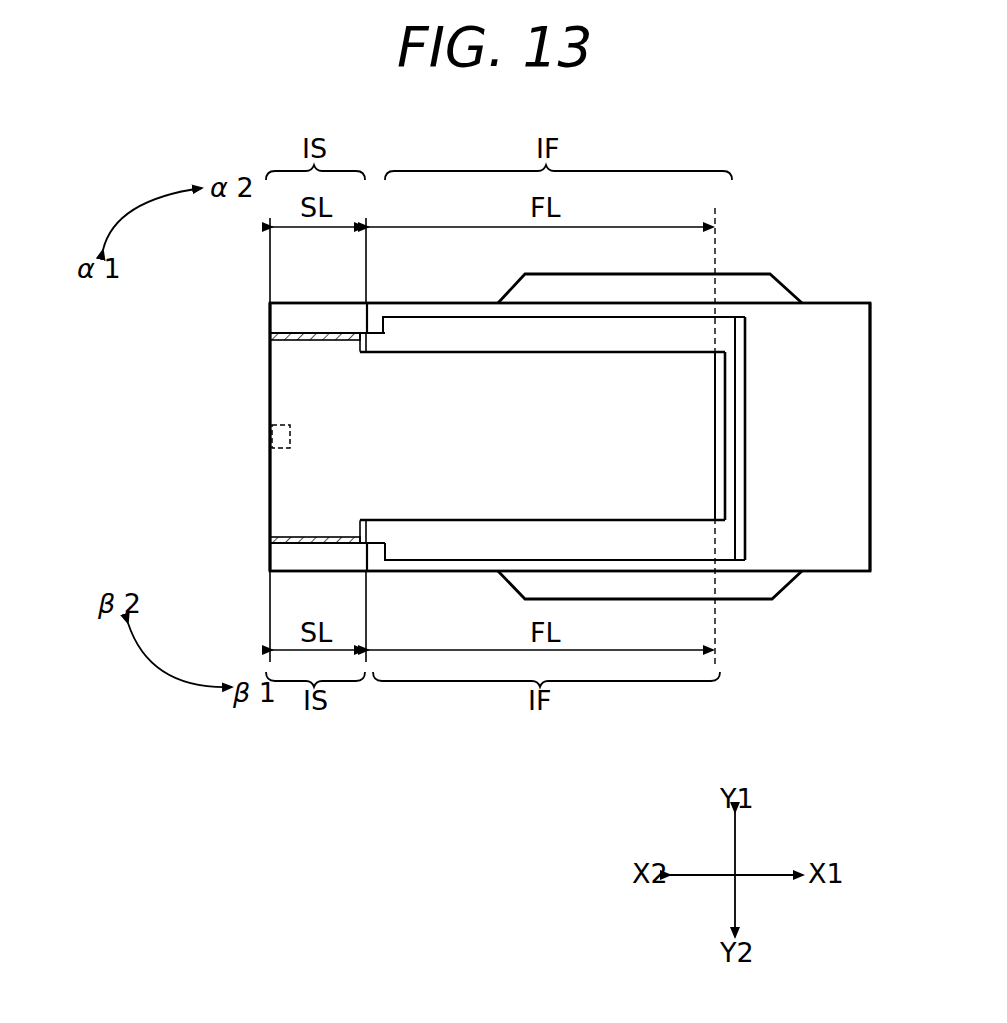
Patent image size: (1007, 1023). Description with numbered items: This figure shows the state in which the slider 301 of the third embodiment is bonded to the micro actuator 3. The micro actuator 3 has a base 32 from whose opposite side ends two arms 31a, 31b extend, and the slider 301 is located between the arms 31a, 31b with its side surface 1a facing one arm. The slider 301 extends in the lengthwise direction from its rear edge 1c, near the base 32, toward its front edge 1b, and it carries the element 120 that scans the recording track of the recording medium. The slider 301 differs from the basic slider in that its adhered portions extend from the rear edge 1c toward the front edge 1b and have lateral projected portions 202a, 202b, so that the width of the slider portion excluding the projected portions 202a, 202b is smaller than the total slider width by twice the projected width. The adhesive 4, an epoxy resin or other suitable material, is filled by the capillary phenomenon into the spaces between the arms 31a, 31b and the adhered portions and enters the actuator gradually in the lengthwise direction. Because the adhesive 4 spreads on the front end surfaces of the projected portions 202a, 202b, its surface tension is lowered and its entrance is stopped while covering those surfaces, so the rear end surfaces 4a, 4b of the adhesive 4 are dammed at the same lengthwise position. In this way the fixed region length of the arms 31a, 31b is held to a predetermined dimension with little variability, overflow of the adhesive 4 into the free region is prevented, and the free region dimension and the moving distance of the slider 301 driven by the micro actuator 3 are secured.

The micro actuator 3 is at (822, 282).
The base 32 is at (853, 410).
The arm 31a is at (312, 312).
The arm 31b is at (315, 558).
The adhesive 4 is at (272, 334).
The rear end surface of the adhesive 4a is at (366, 339).
The rear end surface of the adhesive 4b is at (367, 535).
The side surface of the slider 1a is at (297, 392).
The front edge of the slider 1b is at (268, 475).
The rear edge of the slider 1c is at (715, 395).
The element 120 is at (272, 438).
The projected portion 202a is at (290, 368).
The projected portion 202b is at (293, 505).
The slider 301 is at (148, 408).